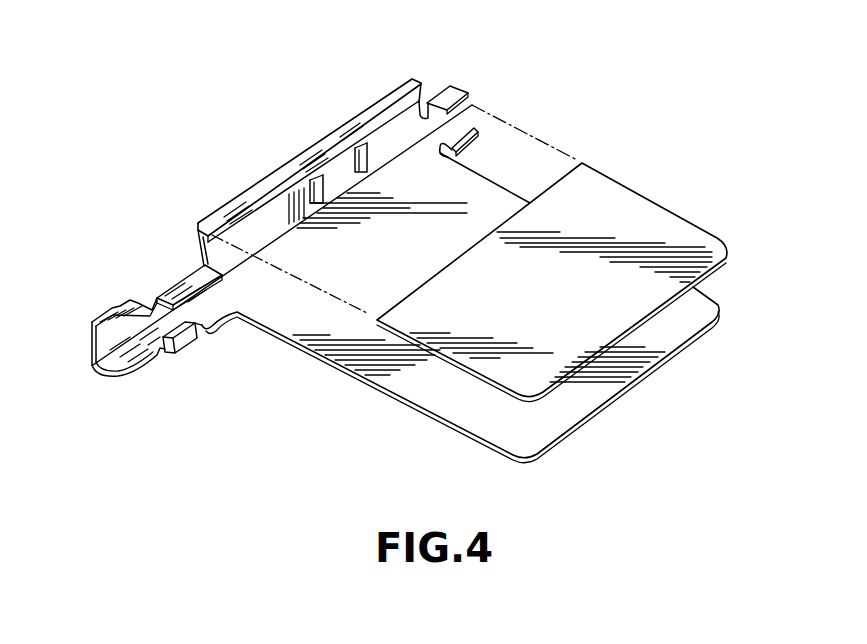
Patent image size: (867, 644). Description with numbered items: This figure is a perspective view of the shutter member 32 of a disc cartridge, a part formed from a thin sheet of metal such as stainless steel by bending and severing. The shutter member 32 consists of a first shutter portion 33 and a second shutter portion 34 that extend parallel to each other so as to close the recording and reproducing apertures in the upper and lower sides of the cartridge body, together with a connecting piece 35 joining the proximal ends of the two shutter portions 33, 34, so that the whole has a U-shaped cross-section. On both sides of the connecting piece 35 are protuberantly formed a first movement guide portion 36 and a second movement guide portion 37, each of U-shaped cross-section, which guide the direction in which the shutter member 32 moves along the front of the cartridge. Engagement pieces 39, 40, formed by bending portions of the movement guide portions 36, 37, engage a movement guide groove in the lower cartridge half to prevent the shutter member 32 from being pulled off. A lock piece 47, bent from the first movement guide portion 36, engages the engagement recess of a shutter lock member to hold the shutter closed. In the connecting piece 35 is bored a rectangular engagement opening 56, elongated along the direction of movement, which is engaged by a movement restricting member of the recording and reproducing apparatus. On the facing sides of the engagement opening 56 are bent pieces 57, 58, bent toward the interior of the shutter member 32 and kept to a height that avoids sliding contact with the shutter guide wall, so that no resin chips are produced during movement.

The shutter member 32 is at (253, 180).
The first shutter portion 33 is at (623, 187).
The second shutter portion 34 is at (420, 400).
The connecting piece 35 is at (197, 245).
The first movement guide portion 36 is at (100, 347).
The second movement guide portion 37 is at (453, 90).
The engagement piece 39 is at (175, 342).
The engagement piece 40 is at (487, 110).
The lock piece 47 is at (115, 302).
The engagement opening 56 is at (345, 168).
The bent piece 57 is at (308, 192).
The bent piece 58 is at (378, 140).